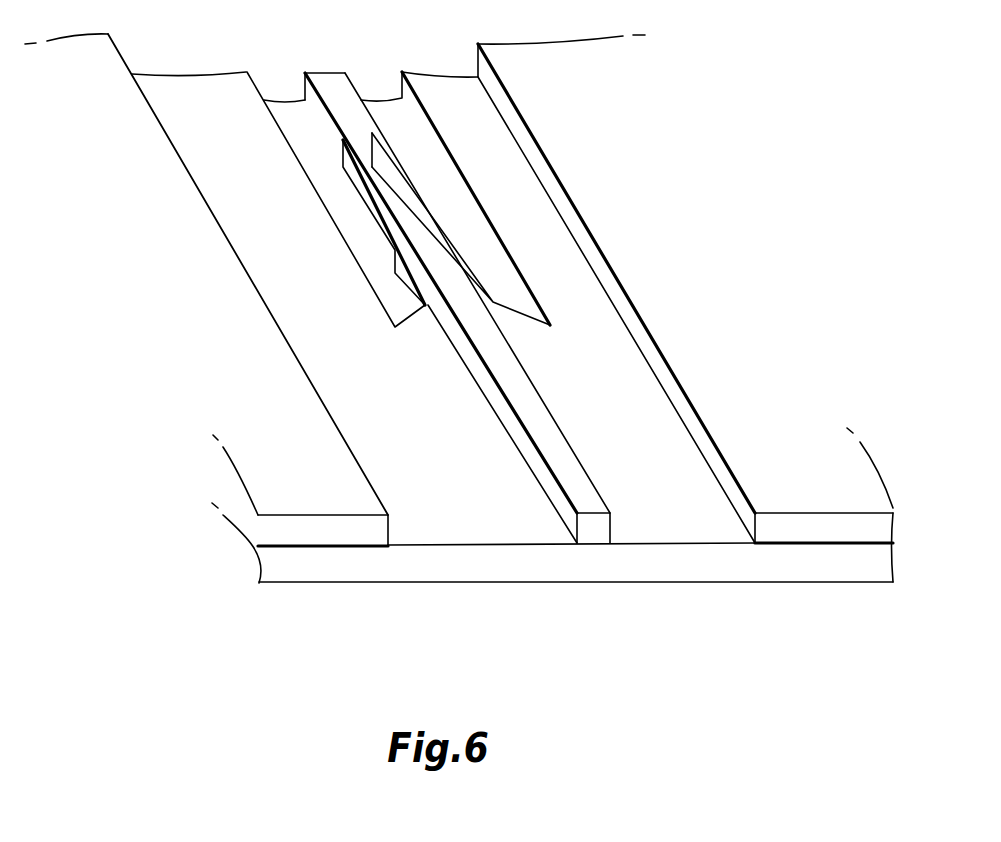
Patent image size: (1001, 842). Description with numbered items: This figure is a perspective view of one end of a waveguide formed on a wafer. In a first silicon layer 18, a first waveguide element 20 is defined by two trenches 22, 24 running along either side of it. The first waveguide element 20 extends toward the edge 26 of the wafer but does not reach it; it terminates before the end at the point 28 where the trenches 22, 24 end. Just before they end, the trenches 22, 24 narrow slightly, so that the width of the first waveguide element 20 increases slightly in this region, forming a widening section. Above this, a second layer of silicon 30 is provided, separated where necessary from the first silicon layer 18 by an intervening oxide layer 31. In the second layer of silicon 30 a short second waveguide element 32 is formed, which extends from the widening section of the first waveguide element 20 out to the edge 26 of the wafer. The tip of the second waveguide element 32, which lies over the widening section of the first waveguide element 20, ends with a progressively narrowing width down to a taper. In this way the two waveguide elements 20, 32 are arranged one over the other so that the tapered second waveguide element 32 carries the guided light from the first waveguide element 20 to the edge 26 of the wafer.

The first silicon layer 18 is at (305, 570).
The first waveguide element 20 is at (327, 80).
The trench 22 is at (408, 140).
The trench 24 is at (310, 150).
The edge of the wafer 26 is at (462, 583).
The termination point of the first waveguide element 28 is at (387, 290).
The second layer of silicon 30 is at (275, 532).
The intervening oxide layer 31 is at (327, 547).
The second waveguide element 32 is at (552, 435).